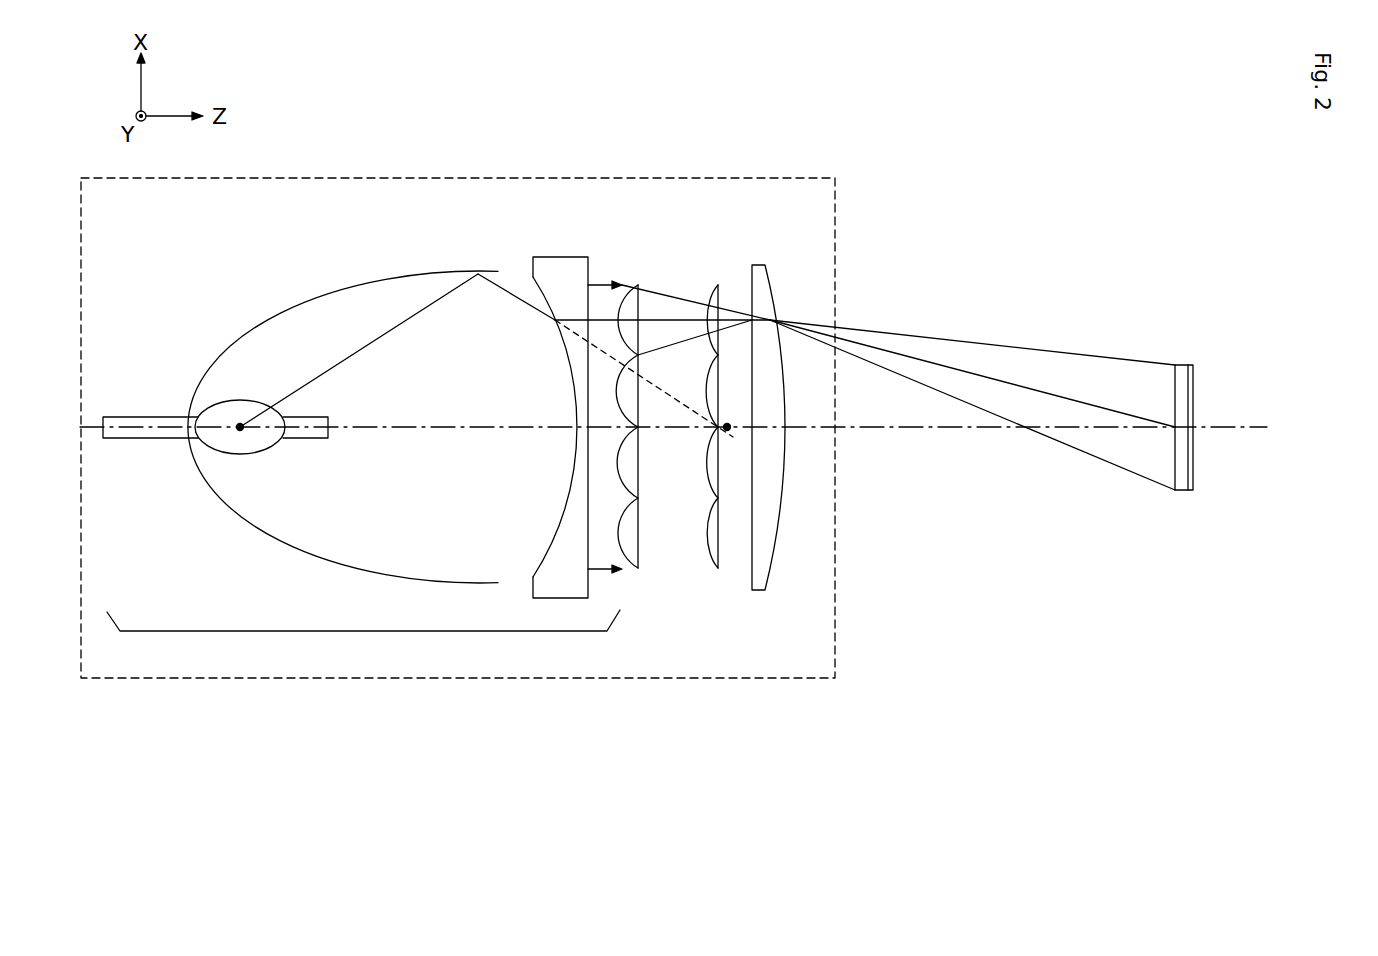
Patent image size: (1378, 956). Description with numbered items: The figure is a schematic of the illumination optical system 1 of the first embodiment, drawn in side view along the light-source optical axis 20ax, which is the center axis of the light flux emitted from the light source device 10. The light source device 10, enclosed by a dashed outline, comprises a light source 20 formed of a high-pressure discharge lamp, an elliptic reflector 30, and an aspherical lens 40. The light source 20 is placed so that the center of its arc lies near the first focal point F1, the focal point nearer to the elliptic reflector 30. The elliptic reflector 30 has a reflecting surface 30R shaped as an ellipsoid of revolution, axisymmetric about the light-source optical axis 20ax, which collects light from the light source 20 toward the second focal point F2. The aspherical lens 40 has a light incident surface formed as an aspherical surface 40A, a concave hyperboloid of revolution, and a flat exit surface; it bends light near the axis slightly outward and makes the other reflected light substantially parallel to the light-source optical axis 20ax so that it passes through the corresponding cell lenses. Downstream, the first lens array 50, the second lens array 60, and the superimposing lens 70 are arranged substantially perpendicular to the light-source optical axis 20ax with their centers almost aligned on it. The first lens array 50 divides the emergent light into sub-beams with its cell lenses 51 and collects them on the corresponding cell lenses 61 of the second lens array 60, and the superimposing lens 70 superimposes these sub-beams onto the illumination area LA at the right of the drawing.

The illumination optical system 1 is at (772, 178).
The light source device 10 is at (467, 631).
The light source 20 is at (215, 429).
The light-source optical axis 20ax is at (1248, 425).
The elliptic reflector 30 is at (343, 395).
The reflecting surface 30R is at (318, 298).
The aspherical lens 40 is at (536, 394).
The aspherical surface 40A is at (573, 390).
The first lens array 50 is at (655, 379).
The cell lens 51 is at (635, 303).
The second lens array 60 is at (731, 379).
The cell lens 61 is at (712, 300).
The superimposing lens 70 is at (765, 265).
The illumination area LA is at (1185, 365).
The first focal point F1 is at (241, 431).
The second focal point F2 is at (728, 432).